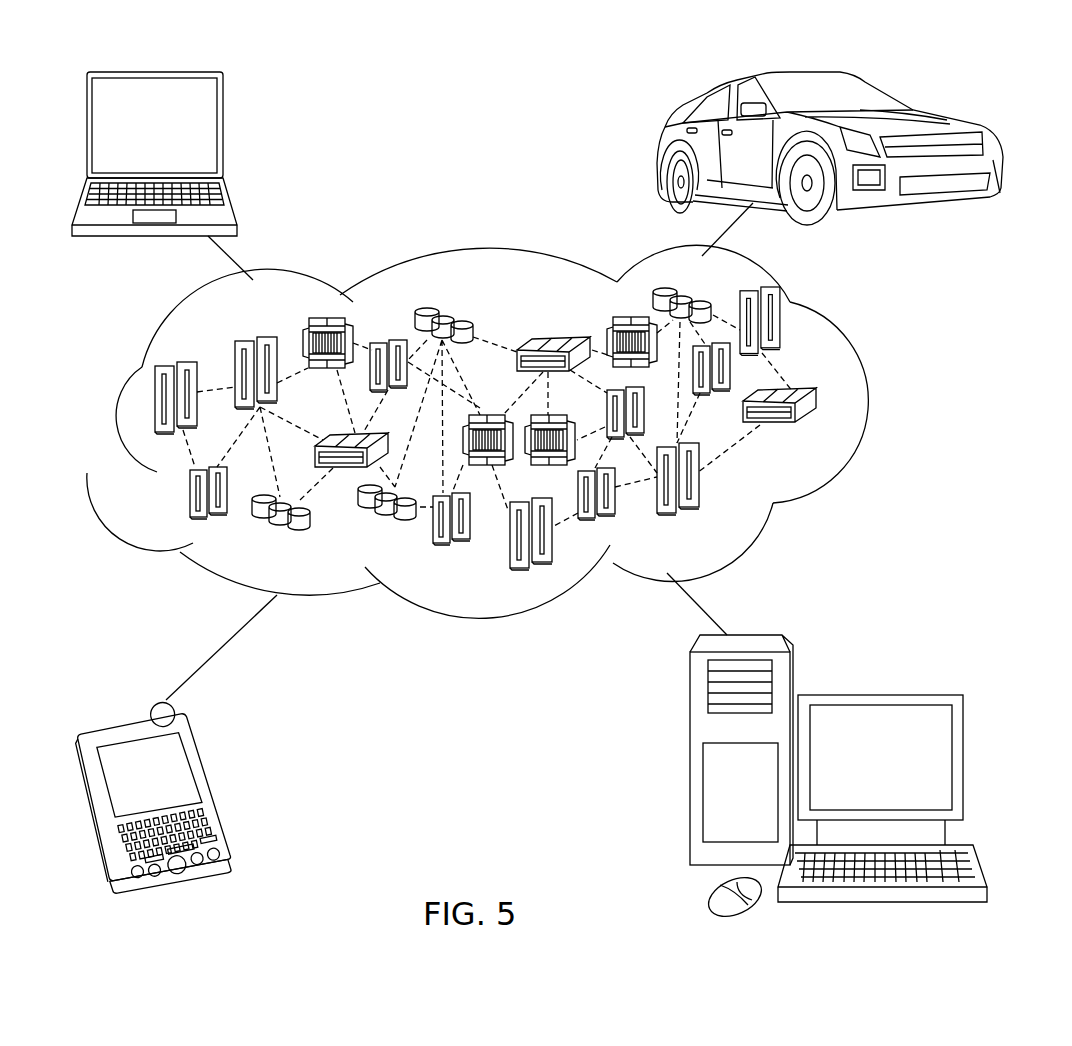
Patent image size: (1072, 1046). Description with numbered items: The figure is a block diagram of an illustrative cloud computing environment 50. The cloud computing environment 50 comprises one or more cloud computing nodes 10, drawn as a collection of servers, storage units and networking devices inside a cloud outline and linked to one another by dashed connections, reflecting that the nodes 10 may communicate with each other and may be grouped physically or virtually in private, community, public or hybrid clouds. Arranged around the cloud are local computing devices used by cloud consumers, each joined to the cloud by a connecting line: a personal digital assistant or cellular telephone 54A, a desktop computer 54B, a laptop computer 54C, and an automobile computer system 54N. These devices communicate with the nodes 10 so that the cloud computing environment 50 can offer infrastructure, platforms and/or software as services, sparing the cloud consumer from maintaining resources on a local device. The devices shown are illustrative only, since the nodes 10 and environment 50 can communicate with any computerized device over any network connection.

The cloud computing nodes 10 is at (828, 439).
The cloud computing environment 50 is at (511, 431).
The personal digital assistant (PDA) or cellular telephone 54A is at (213, 787).
The desktop computer 54B is at (877, 692).
The laptop computer 54C is at (223, 133).
The automobile computer system 54N is at (662, 148).